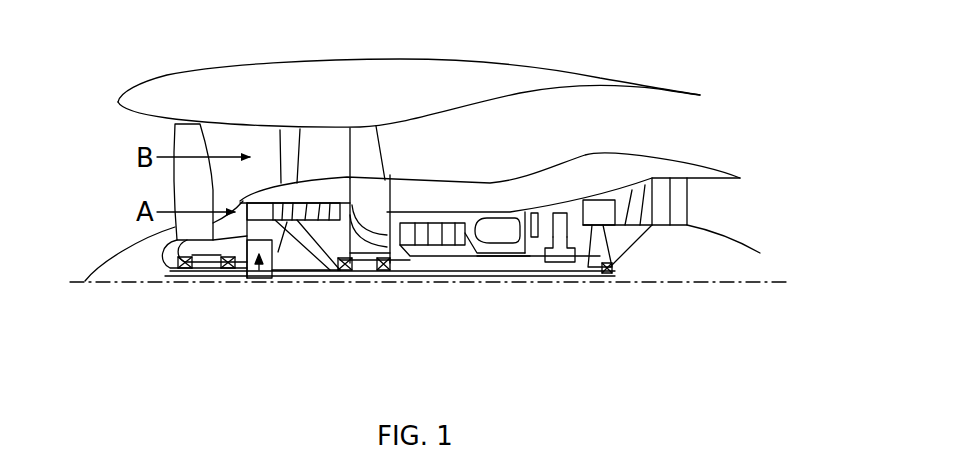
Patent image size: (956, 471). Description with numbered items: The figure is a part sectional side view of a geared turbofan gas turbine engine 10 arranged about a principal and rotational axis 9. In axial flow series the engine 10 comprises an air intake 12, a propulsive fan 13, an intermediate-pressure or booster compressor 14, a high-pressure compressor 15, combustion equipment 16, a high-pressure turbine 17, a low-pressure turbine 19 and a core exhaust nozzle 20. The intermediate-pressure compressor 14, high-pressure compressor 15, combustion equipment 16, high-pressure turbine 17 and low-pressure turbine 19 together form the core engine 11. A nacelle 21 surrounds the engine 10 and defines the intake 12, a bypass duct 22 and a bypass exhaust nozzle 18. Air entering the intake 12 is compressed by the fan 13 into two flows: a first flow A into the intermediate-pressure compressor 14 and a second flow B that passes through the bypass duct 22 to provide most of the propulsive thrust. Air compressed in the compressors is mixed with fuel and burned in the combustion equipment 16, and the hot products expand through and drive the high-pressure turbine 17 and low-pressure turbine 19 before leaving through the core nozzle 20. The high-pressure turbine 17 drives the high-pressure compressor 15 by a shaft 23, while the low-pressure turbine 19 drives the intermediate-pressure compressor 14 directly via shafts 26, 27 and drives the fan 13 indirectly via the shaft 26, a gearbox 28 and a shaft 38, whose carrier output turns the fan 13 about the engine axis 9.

The principal and rotational axis 9 is at (660, 282).
The geared turbofan gas turbine engine 10 is at (158, 73).
The core engine 11 is at (489, 198).
The air intake 12 is at (140, 131).
The propulsive fan 13 is at (185, 185).
The intermediate-pressure compressor 14 is at (319, 200).
The high-pressure compressor 15 is at (440, 222).
The combustion equipment 16 is at (505, 233).
The high-pressure turbine 17 is at (570, 203).
The bypass exhaust nozzle 18 is at (668, 112).
The low-pressure turbine 19 is at (667, 190).
The core exhaust nozzle 20 is at (727, 205).
The nacelle 21 is at (384, 72).
The bypass duct 22 is at (594, 131).
The shaft 23 is at (512, 256).
The shaft 26 is at (430, 282).
The shaft 27 is at (303, 257).
The gearbox 28 is at (257, 278).
The shaft 38 is at (195, 270).